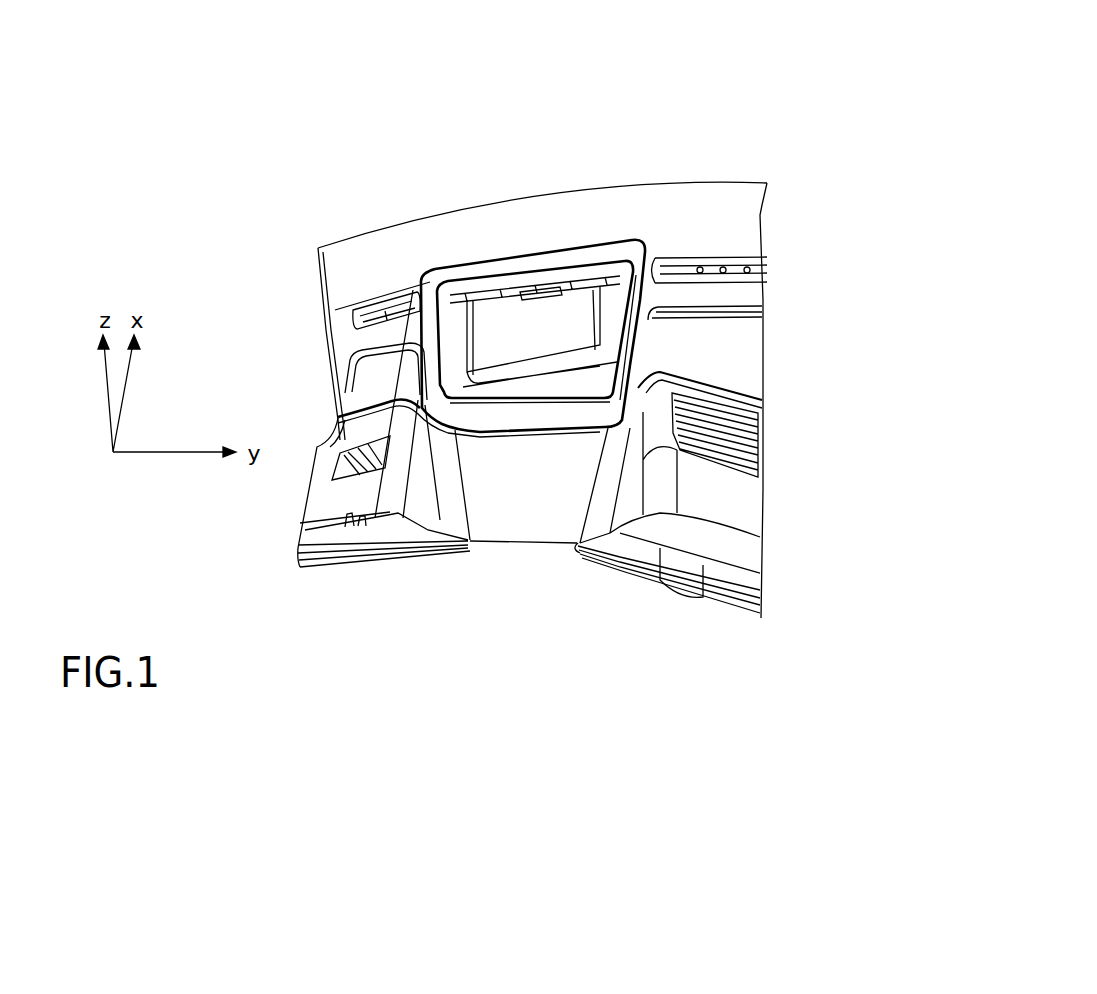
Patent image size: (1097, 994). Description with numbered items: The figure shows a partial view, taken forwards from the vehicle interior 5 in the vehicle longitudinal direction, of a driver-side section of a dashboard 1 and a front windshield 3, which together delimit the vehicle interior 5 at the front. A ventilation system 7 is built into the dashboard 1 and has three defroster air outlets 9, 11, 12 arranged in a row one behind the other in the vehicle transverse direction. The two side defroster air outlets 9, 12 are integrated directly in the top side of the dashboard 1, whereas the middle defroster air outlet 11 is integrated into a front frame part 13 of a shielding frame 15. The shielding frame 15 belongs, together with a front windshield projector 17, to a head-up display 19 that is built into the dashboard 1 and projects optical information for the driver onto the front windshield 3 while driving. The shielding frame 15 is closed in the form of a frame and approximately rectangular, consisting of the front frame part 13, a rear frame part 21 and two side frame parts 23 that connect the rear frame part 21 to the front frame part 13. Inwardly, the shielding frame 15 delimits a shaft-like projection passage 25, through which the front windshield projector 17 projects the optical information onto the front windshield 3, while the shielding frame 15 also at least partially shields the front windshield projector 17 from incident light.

The dashboard 1 is at (347, 338).
The front windshield 3 is at (375, 229).
The vehicle interior 5 is at (526, 611).
The ventilation system 7 is at (443, 138).
The defroster air outlet 9 is at (403, 307).
The defroster air outlet 11 is at (540, 285).
The defroster air outlet 12 is at (675, 271).
The front frame part 13 is at (540, 286).
The shielding frame 15 is at (950, 453).
The front windshield projector 17 is at (612, 303).
The head-up display 19 is at (1018, 370).
The rear frame part 21 is at (522, 402).
The side frame parts 23 is at (622, 360).
The projection passage 25 is at (535, 334).